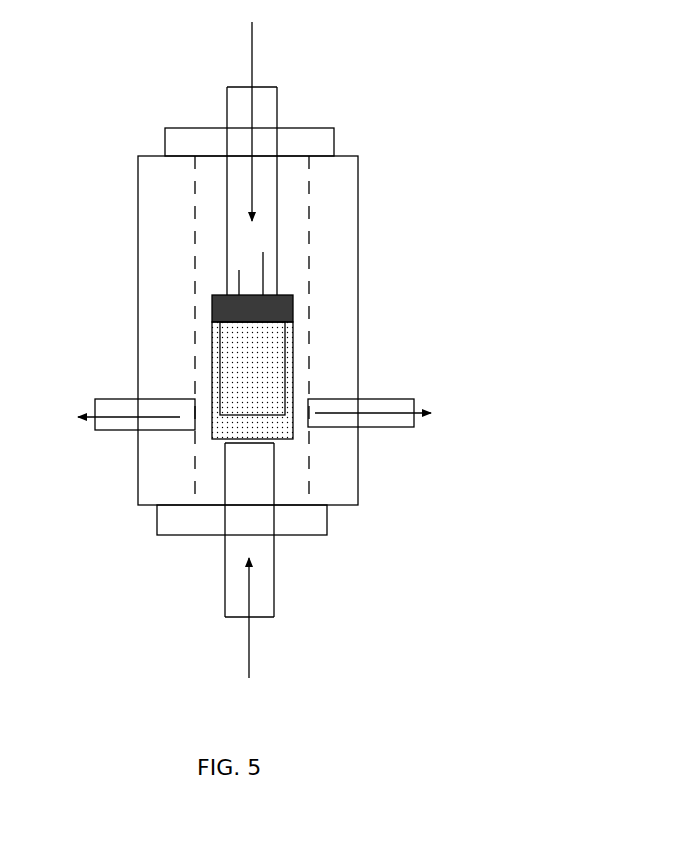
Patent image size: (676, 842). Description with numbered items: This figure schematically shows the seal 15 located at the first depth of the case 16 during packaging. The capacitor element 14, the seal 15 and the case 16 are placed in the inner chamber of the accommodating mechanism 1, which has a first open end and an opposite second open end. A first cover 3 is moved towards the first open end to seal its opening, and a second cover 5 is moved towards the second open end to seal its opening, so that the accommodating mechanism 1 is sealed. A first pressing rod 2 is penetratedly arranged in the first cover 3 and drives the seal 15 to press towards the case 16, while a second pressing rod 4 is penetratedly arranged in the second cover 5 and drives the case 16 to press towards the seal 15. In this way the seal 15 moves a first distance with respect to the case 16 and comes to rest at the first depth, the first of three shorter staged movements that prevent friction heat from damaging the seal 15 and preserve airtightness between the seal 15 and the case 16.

The accommodating mechanism 1 is at (150, 462).
The first pressing rod 2 is at (270, 94).
The first cover 3 is at (325, 143).
The second pressing rod 4 is at (260, 593).
The second cover 5 is at (174, 527).
The capacitor element 14 is at (267, 373).
The seal 15 is at (210, 305).
The case 16 is at (217, 395).